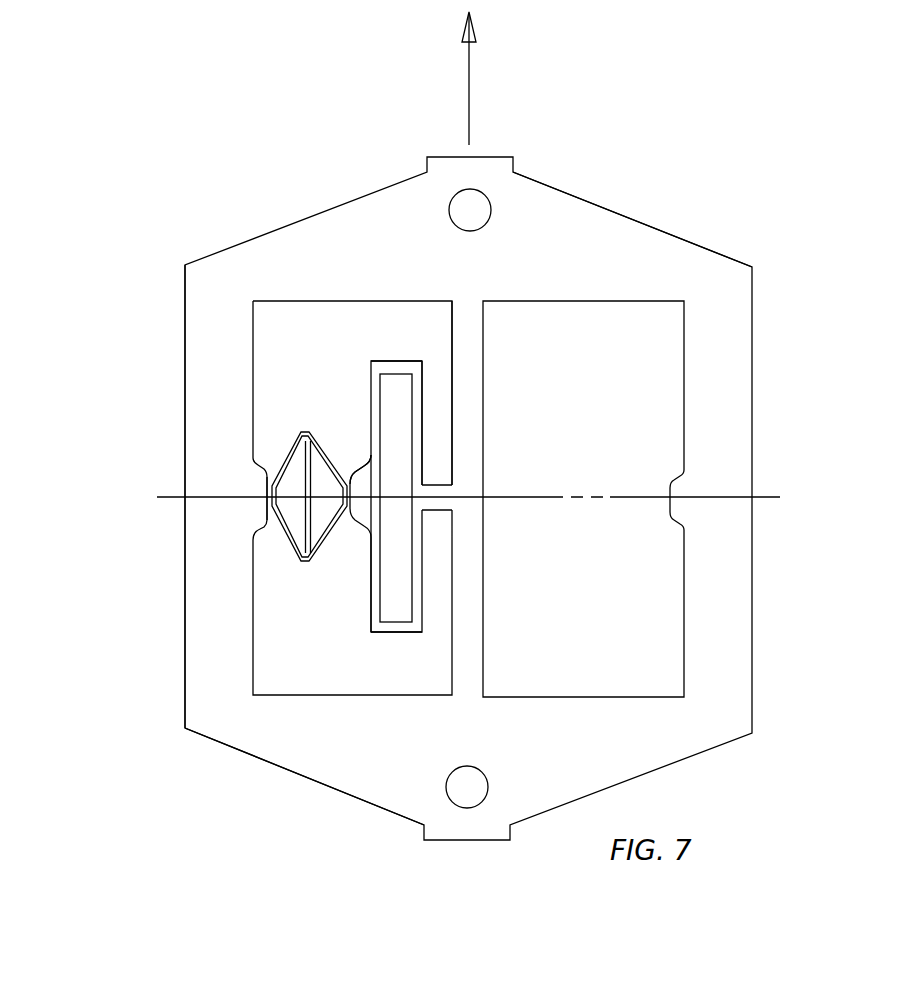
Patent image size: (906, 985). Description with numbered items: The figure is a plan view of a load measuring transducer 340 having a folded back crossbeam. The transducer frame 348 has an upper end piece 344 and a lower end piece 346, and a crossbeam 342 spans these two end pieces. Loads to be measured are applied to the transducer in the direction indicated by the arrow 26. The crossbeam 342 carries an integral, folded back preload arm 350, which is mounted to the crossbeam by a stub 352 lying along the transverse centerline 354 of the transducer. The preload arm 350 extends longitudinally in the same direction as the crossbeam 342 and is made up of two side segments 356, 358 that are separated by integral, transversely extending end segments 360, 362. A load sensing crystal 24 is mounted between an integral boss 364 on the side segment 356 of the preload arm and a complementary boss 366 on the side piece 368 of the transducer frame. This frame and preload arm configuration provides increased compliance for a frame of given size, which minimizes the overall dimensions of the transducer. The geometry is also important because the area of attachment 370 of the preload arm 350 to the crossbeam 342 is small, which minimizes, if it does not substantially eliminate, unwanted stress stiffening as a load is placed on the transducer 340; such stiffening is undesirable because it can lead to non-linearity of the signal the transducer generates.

The load sensing crystal 24 is at (292, 446).
The arrow 26 is at (470, 118).
The transducer 340 is at (284, 166).
The crossbeam 342 is at (492, 400).
The upper end piece 344 is at (574, 194).
The lower end piece 346 is at (330, 787).
The transducer frame 348 is at (181, 362).
The preload arm 350 is at (368, 380).
The stub 352 is at (436, 512).
The transverse centerline 354 is at (763, 503).
The side segment 356 is at (366, 594).
The side segment 358 is at (417, 603).
The end segment 360 is at (397, 360).
The end segment 362 is at (400, 634).
The boss 364 is at (367, 457).
The boss 366 is at (261, 535).
The side piece 368 is at (183, 640).
The area of attachment 370 is at (436, 493).